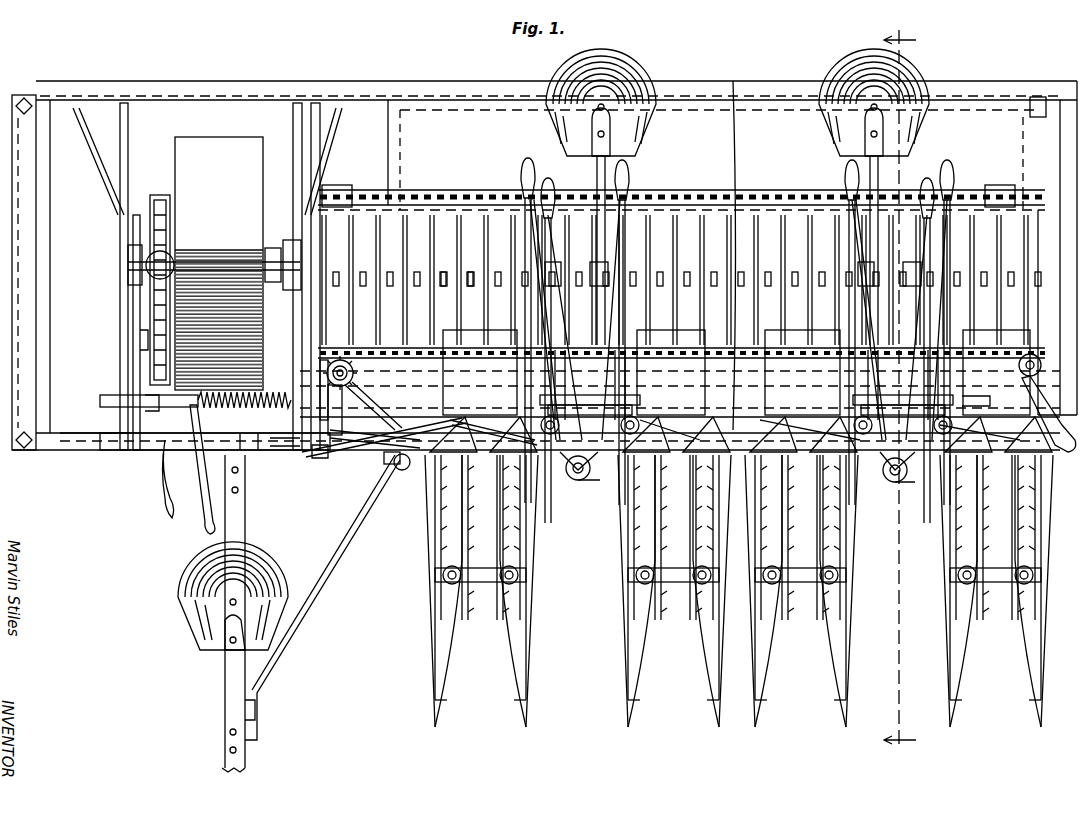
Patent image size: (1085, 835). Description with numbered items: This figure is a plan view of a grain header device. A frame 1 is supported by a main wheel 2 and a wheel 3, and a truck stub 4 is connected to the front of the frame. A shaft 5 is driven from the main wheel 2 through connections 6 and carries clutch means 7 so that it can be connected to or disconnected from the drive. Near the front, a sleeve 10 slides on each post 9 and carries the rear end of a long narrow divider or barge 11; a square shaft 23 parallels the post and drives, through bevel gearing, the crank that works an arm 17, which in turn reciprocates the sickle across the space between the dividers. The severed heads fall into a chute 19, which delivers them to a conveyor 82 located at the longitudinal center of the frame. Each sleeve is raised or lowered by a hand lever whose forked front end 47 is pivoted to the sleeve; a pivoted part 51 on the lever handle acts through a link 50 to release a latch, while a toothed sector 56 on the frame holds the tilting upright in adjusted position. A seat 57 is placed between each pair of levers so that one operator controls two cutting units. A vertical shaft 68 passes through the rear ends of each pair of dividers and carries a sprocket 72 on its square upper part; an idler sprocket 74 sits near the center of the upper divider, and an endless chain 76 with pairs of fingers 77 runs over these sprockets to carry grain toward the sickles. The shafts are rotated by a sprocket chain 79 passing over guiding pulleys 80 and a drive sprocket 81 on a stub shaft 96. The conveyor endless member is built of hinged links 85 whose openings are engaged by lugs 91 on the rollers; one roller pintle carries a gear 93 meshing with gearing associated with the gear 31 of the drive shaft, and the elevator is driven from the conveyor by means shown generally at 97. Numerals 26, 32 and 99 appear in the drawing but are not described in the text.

The frame 1 is at (445, 93).
The main wheel 2 is at (225, 145).
The wheel 3 is at (1050, 197).
The truck stub 4 is at (232, 537).
The shaft 5 is at (272, 395).
The connections 6 is at (155, 298).
The clutch means 7 is at (189, 469).
The post 9 is at (520, 412).
The sleeve 10 is at (735, 471).
The divider or barge 11 is at (1000, 660).
The arm 17 is at (560, 407).
The chute 19 is at (736, 372).
The square shaft 23 is at (754, 492).
The plate 26 is at (976, 406).
The gear 31 is at (324, 458).
The cross bar 32 is at (300, 448).
The forked front end 47 is at (550, 398).
The link 50 is at (555, 385).
The pivoted part 51 is at (616, 176).
The toothed sector 56 is at (600, 283).
The seat 57 is at (632, 88).
The vertical shaft 68 is at (737, 425).
The sprocket 72 is at (734, 480).
The idler sprocket 74 is at (737, 567).
The chain 76 is at (737, 523).
The fingers 77 is at (737, 581).
The sprocket chain 79 is at (380, 440).
The guiding pulleys 80 is at (1022, 388).
The drive sprocket 81 is at (350, 397).
The conveyor 82 is at (758, 206).
The links 85 is at (490, 230).
The lugs 91 is at (380, 282).
The gear 93 is at (376, 395).
The stub shaft 96 is at (355, 370).
The driving means 97 is at (348, 193).
The clip 99 is at (462, 280).